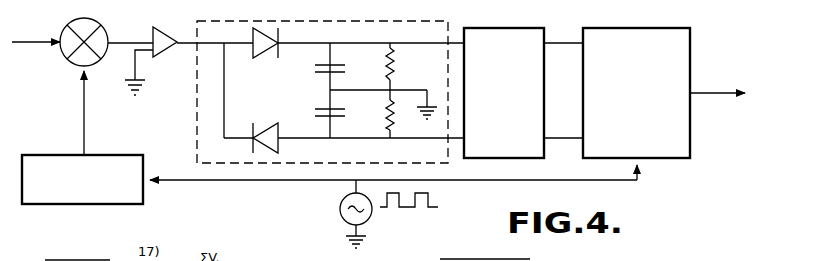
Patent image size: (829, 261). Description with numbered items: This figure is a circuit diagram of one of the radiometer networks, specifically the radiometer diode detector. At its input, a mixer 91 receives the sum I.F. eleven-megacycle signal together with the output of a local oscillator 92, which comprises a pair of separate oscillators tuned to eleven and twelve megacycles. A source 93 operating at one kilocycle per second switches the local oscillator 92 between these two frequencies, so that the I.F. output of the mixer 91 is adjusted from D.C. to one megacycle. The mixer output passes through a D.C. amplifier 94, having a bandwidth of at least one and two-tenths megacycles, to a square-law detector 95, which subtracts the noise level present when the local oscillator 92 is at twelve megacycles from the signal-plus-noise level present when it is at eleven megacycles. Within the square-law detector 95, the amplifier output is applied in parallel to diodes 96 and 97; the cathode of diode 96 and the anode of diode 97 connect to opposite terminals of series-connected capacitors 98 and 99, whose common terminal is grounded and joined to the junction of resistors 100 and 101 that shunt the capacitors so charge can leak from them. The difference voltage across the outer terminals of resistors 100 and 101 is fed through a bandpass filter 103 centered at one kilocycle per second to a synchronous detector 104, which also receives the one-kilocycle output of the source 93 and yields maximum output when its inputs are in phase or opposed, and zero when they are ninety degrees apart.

The mixer 91 is at (71, 20).
The local oscillator 92 is at (127, 157).
The source 93 is at (340, 213).
The D.C. amplifier 94 is at (165, 30).
The square-law detector 95 is at (343, 21).
The diode 96 is at (258, 44).
The diode 97 is at (268, 124).
The capacitor 98 is at (315, 68).
The capacitor 99 is at (315, 111).
The resistor 100 is at (386, 58).
The resistor 101 is at (386, 114).
The bandpass filter 103 is at (495, 38).
The synchronous detector 104 is at (637, 38).